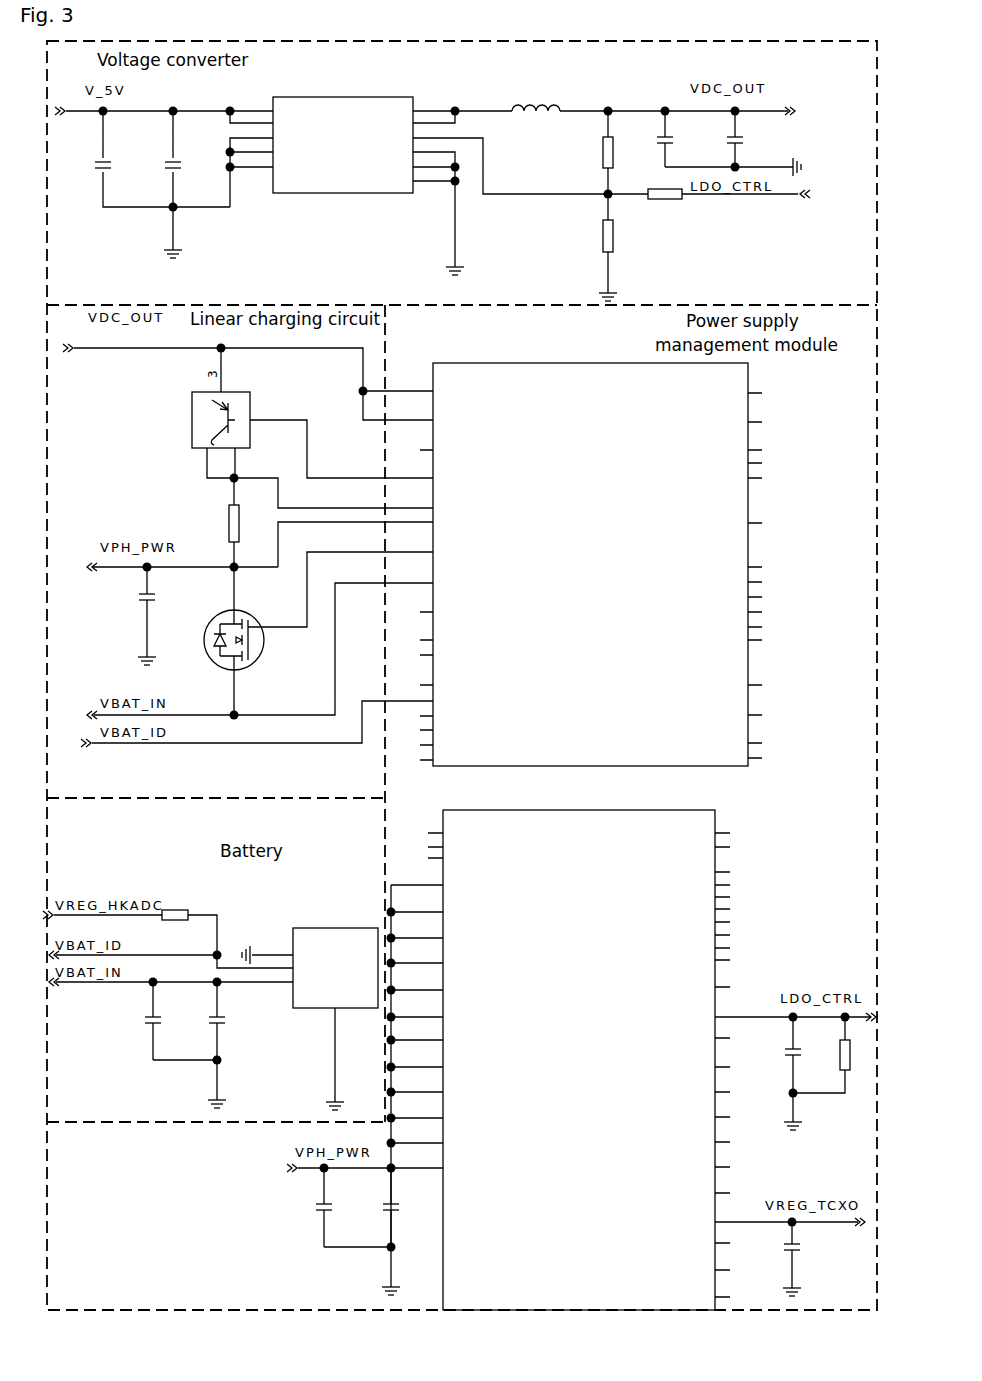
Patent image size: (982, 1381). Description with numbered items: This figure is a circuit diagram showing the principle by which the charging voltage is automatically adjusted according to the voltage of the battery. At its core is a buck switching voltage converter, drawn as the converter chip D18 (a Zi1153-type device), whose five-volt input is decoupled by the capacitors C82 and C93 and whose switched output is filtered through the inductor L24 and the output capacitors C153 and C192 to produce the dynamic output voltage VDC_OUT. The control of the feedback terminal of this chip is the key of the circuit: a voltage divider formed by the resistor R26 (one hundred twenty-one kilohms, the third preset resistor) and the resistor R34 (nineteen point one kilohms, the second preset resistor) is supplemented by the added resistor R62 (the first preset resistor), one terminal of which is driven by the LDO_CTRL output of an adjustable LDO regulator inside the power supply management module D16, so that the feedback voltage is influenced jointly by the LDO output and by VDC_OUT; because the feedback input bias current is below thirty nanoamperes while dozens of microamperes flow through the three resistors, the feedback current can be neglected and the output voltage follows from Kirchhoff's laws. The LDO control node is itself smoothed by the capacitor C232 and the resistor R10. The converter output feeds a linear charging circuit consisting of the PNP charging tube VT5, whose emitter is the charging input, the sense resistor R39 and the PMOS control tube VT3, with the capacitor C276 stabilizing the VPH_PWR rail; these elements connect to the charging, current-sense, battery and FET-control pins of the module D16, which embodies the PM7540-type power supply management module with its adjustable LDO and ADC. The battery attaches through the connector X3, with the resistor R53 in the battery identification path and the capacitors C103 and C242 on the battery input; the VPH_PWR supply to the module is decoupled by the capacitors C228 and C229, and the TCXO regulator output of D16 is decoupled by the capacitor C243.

The input capacitor 22uF C82 is at (112, 168).
The input capacitor 0.1uF C93 is at (180, 170).
The voltage converter IC ZI1153IDE-0.6-T1 D18 is at (343, 127).
The inductor 3.3uH L24 is at (540, 108).
The third preset resistor R26 is at (607, 152).
The second preset resistor R34 is at (607, 243).
The first preset resistor R62 is at (703, 192).
The output capacitor 0.1uF C153 is at (673, 139).
The output capacitor 22uF C192 is at (742, 139).
The charging transistor VT5 is at (210, 436).
The current sense resistor 0.1 R39 is at (233, 522).
The VPH_PWR capacitor 22uF C276 is at (148, 612).
The battery FET VT3 is at (296, 633).
The power supply management module PM7540 D16 is at (591, 825).
The battery ID resistor 33.2Kohm R53 is at (135, 921).
The battery connector X3 is at (325, 1003).
The battery capacitor 10uF C103 is at (153, 1021).
The battery capacitor 0.1uF C242 is at (218, 1021).
The VPH_PWR capacitor 10uF C228 is at (331, 1207).
The VPH_PWR capacitor 0.1uF C229 is at (390, 1212).
The LDO_CTRL capacitor 2.2uF C232 is at (793, 1055).
The LDO_CTRL resistor 10Kohm R10 is at (829, 1055).
The VREG_TCXO capacitor 2.2uF C243 is at (799, 1255).